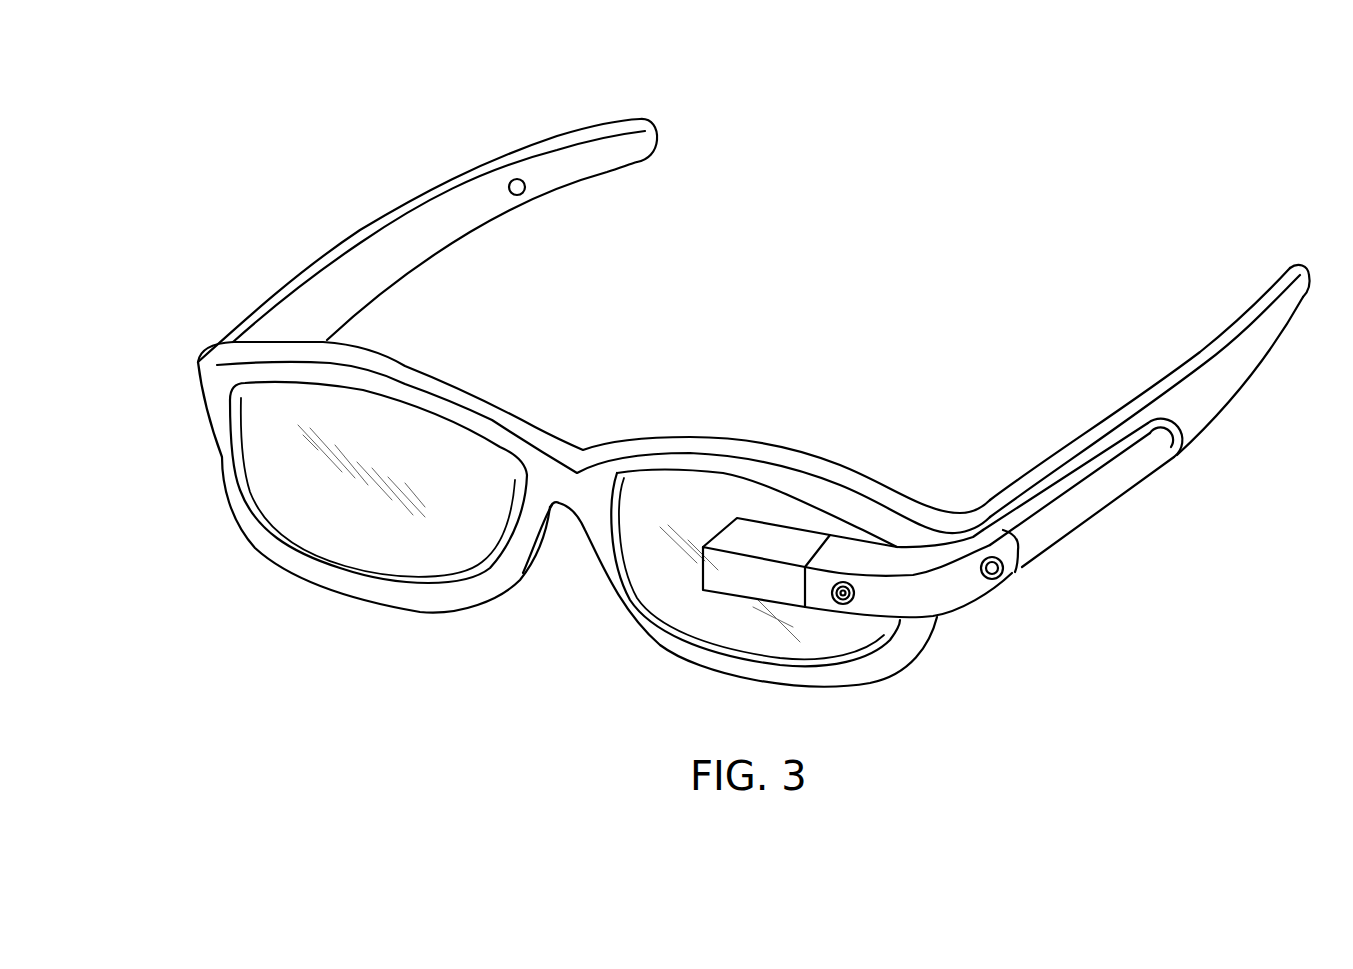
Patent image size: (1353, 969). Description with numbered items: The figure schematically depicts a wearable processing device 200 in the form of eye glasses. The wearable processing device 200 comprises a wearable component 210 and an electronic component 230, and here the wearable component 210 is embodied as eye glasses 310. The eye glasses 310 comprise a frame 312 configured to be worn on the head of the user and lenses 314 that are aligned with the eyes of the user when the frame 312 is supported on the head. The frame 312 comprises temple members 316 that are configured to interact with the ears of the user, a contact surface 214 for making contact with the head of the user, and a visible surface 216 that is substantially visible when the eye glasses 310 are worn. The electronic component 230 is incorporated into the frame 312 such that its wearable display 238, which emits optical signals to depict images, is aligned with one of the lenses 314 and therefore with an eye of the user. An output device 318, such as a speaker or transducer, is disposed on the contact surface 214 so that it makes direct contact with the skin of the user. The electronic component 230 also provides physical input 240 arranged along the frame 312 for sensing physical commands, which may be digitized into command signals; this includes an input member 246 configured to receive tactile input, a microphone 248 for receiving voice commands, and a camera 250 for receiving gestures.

The wearable processing device 200 is at (1175, 214).
The wearable component 210 is at (172, 360).
The contact surface 214 is at (422, 270).
The visible surface 216 is at (1222, 387).
The electronic component 230 is at (1158, 511).
The wearable display 238 is at (753, 587).
The physical input 240 is at (1101, 426).
The input member 246 is at (1072, 520).
The microphone 248 is at (1000, 570).
The camera 250 is at (857, 597).
The eye glasses 310 is at (357, 590).
The frame 312 is at (222, 458).
The lenses 314 is at (447, 557).
The temple members 316 is at (570, 157).
The output device 318 is at (519, 196).